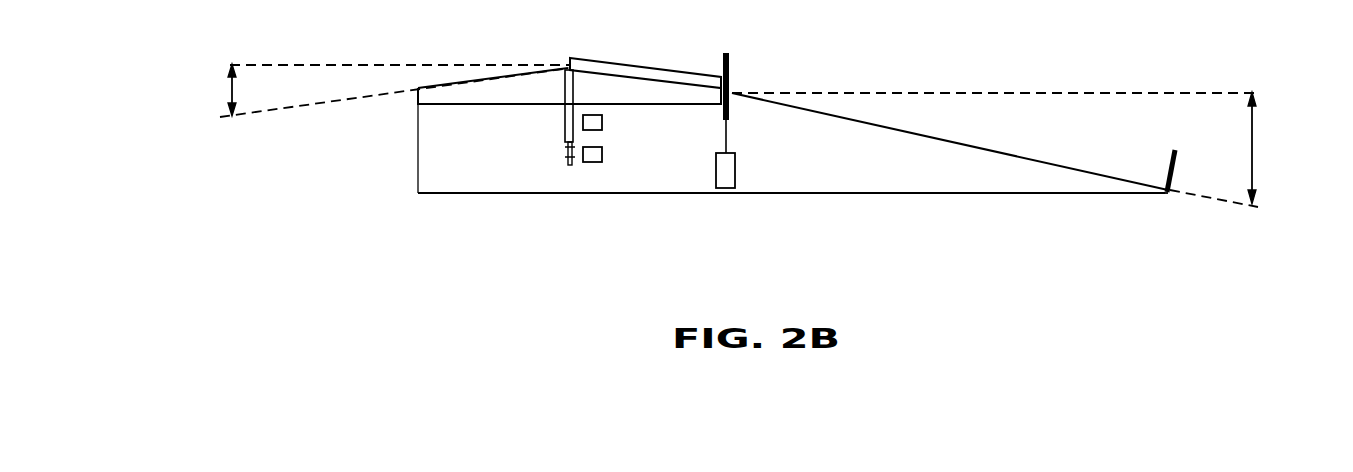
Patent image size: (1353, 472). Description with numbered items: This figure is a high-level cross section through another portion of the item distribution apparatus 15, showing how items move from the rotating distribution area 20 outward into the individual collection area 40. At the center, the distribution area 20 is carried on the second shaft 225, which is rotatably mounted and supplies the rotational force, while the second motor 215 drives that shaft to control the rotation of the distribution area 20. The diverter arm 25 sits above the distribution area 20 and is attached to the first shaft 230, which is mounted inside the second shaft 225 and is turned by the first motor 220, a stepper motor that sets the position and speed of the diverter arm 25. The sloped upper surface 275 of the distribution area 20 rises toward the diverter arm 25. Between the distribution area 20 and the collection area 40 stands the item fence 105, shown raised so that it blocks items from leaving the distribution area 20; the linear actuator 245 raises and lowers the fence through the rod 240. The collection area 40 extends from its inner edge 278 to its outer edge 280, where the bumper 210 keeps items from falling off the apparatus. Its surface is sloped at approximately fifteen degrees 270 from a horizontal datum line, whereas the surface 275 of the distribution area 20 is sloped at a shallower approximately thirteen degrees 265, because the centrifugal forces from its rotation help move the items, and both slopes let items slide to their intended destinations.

The distribution area 20 is at (458, 95).
The front sloped surface 275 is at (421, 88).
The diverter arm 25 is at (648, 68).
The second shaft 225 is at (564, 113).
The first shaft 230 is at (567, 158).
The second motor 215 is at (603, 123).
The first motor 220 is at (603, 152).
The item fence 105 is at (731, 58).
The inner edge 278 is at (735, 92).
The rod 240 is at (728, 128).
The linear actuator 245 is at (736, 176).
The individual collection area 40 is at (994, 150).
The item distribution apparatus 15 is at (928, 178).
The bumper 210 is at (1170, 170).
The outer edge 280 is at (1163, 192).
The angle of approximately 13 degrees 265 is at (230, 89).
The angle of approximately 15 degrees 270 is at (1254, 148).